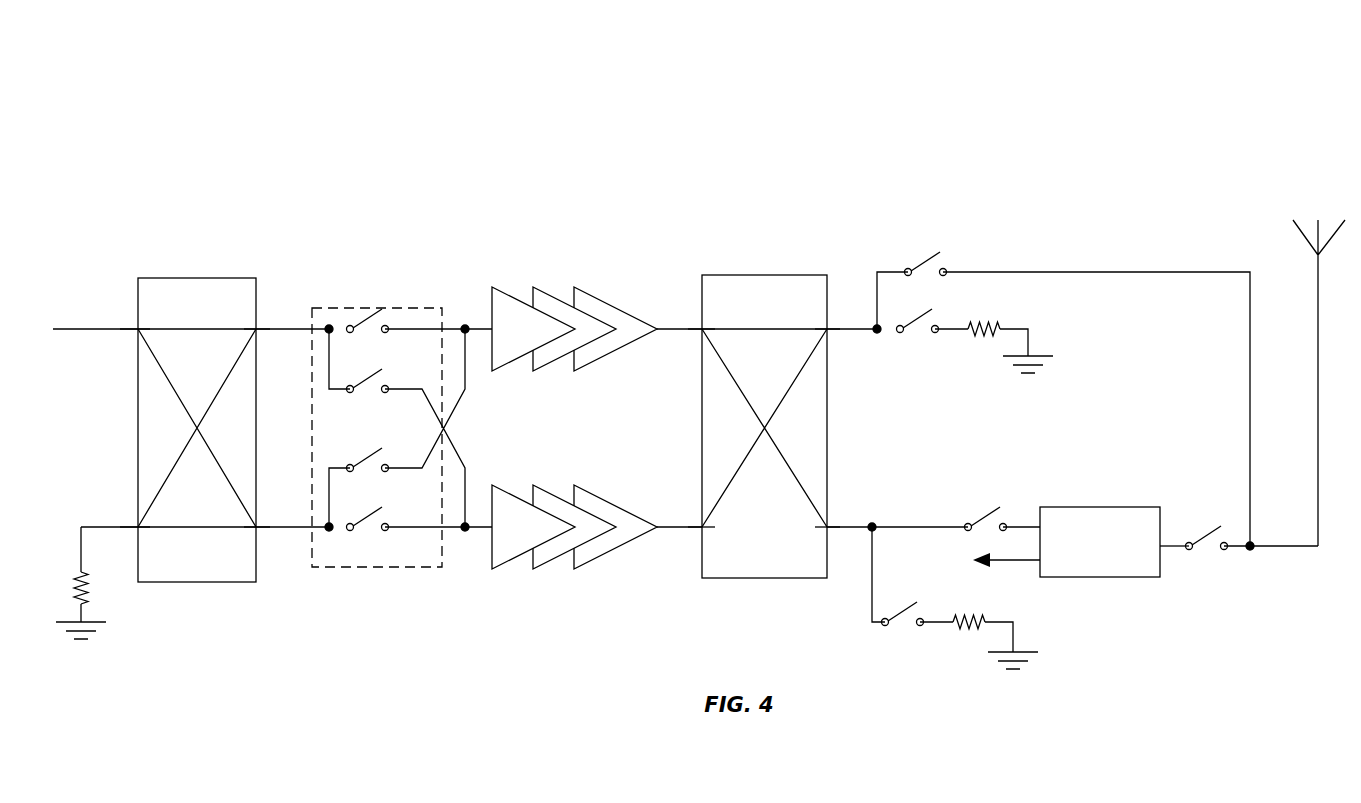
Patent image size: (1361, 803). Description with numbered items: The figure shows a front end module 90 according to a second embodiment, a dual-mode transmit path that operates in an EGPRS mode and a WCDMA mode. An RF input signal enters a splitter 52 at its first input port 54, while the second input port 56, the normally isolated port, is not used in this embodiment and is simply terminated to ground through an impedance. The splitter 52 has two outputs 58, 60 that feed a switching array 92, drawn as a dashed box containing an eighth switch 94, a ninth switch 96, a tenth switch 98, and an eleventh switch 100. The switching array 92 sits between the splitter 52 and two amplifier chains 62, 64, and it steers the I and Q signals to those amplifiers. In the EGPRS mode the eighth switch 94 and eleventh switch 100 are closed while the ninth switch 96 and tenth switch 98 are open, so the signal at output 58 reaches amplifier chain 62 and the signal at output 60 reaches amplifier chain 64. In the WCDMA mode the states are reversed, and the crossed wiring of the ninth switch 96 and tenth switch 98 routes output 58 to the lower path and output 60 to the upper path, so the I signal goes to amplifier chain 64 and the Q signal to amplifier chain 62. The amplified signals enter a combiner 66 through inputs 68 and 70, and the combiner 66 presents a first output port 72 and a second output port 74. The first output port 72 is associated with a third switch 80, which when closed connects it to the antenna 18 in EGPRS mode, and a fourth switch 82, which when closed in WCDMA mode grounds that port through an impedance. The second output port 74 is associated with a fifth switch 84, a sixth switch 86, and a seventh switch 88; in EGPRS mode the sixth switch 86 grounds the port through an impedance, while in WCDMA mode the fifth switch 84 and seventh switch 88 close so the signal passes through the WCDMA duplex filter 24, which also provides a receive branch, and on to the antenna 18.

The front end module 90 is at (902, 145).
The splitter 52 is at (208, 278).
The first input port 54 is at (138, 329).
The second input port 56 is at (138, 527).
The output 58 is at (256, 329).
The output 60 is at (256, 527).
The switching array 92 is at (388, 308).
The eighth switch 94 is at (360, 322).
The ninth switch 96 is at (360, 381).
The tenth switch 98 is at (360, 460).
The eleventh switch 100 is at (363, 519).
The amplifier chain 62 is at (595, 295).
The amplifier chain 64 is at (596, 563).
The combiner 66 is at (765, 275).
The input 68 is at (702, 329).
The input 70 is at (702, 527).
The first output port 72 is at (827, 329).
The second output port 74 is at (827, 527).
The third switch 80 is at (920, 258).
The fourth switch 82 is at (910, 321).
The fifth switch 84 is at (980, 514).
The sixth switch 86 is at (893, 612).
The seventh switch 88 is at (1205, 538).
The WCDMA duplex filter 24 is at (1108, 577).
The antenna 18 is at (1327, 197).